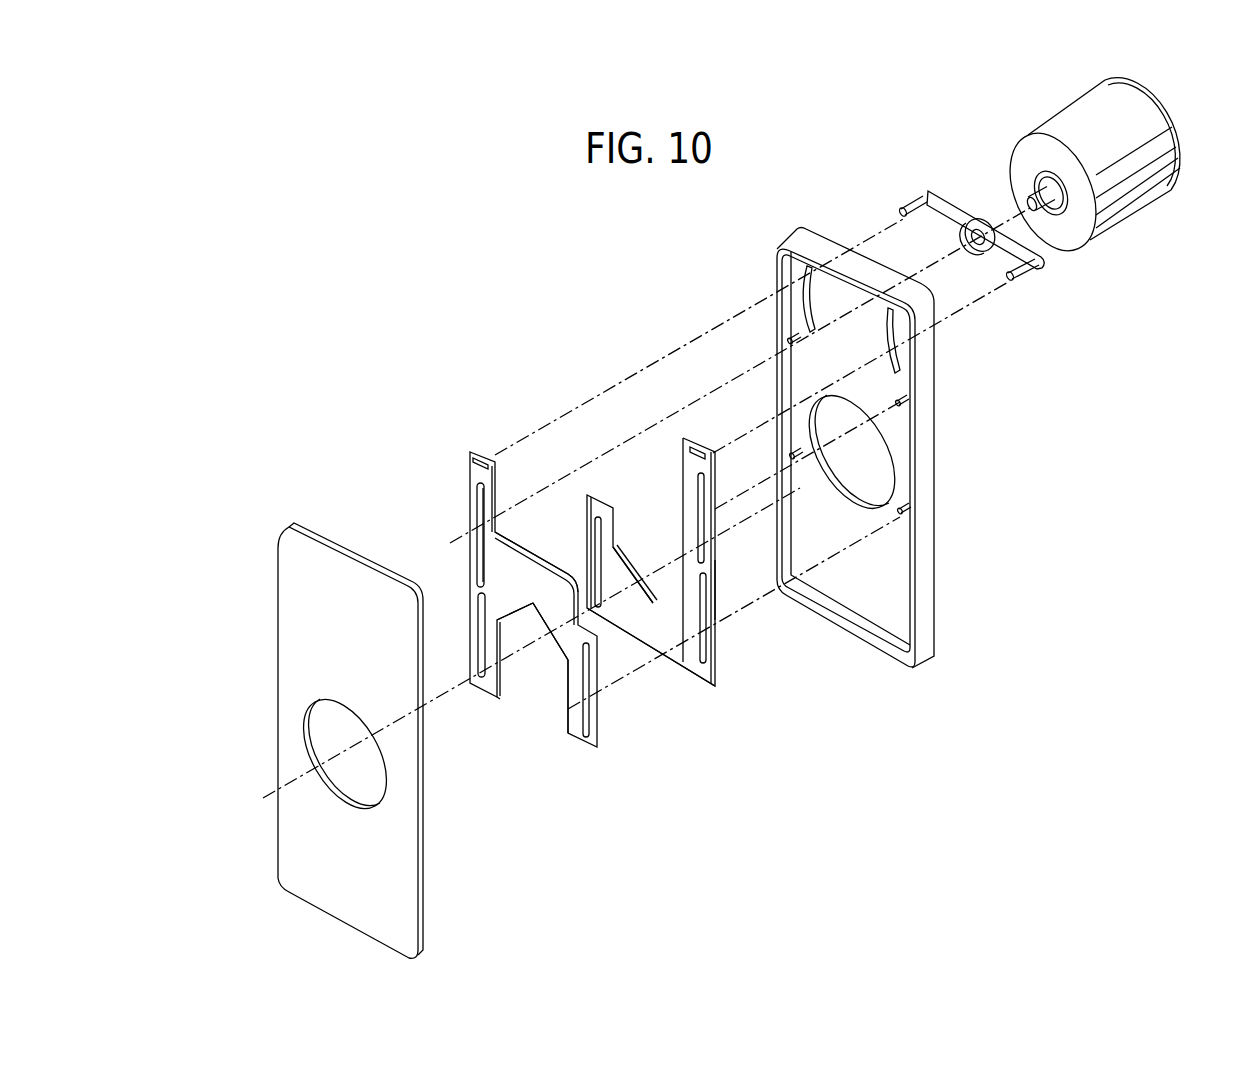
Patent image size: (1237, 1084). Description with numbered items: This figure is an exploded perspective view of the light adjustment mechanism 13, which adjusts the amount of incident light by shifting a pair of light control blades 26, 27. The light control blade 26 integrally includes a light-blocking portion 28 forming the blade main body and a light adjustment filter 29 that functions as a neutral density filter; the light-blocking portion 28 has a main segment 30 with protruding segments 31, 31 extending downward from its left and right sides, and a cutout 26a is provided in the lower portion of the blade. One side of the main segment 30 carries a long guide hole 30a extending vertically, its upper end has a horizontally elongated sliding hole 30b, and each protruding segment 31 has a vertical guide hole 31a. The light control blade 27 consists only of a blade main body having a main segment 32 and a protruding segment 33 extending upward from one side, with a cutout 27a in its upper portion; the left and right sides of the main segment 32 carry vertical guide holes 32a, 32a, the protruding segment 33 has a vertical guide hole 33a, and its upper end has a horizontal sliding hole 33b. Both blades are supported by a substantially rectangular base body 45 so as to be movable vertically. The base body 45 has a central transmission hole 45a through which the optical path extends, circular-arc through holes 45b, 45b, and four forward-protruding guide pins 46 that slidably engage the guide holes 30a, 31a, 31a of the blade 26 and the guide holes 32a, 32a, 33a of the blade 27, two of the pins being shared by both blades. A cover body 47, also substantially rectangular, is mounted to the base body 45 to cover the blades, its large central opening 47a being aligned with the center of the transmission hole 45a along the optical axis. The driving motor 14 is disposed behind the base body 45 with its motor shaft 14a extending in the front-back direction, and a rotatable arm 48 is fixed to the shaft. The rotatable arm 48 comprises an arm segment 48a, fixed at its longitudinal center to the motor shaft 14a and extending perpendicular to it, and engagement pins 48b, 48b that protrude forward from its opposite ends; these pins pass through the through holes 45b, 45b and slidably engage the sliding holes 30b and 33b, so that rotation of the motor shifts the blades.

The light adjustment mechanism 13 is at (370, 177).
The driving motor 14 is at (1095, 175).
The motor shaft 14a is at (1033, 192).
The light control blade 26 is at (509, 606).
The cutout 26a is at (548, 640).
The light control blade 27 is at (646, 591).
The cutout 27a is at (714, 582).
The light-blocking portion 28 is at (483, 565).
The light adjustment filter 29 is at (500, 695).
The main segment 30 is at (562, 586).
The guide hole 30a is at (479, 492).
The sliding hole 30b is at (470, 456).
The protruding segment 31 is at (480, 693).
The guide hole 31a is at (483, 603).
The main segment 32 is at (690, 665).
The guide hole 32a is at (595, 520).
The protruding segment 33 is at (695, 510).
The guide hole 33a is at (694, 503).
The sliding hole 33b is at (700, 452).
The base body 45 is at (862, 448).
The transmission hole 45a is at (893, 462).
The through hole 45b is at (782, 306).
The guide pin 46 is at (793, 346).
The cover body 47 is at (309, 700).
The opening 47a is at (308, 722).
The rotatable arm 48 is at (1002, 218).
The arm segment 48a is at (975, 208).
The engagement pin 48b is at (905, 208).